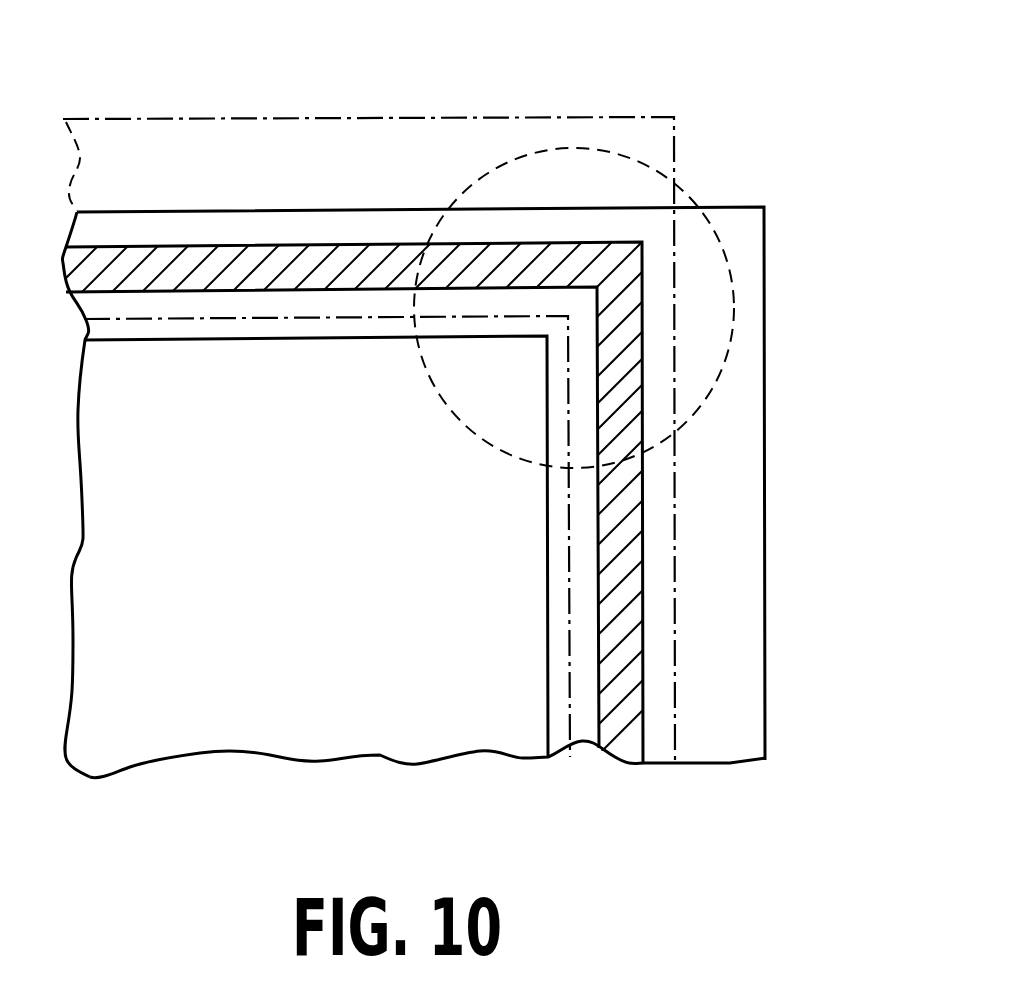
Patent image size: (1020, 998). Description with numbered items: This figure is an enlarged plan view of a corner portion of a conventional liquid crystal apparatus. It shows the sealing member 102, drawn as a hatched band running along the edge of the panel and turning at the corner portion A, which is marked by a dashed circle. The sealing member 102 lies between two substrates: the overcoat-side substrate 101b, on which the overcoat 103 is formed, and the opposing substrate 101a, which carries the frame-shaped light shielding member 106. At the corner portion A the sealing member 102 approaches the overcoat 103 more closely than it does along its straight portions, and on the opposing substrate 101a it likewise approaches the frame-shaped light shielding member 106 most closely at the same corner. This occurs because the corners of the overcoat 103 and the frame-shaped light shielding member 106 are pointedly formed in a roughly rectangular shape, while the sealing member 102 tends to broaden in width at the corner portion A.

The substrate 101a is at (366, 116).
The overcoat-side substrate 101b is at (764, 458).
The sealing member 102 is at (171, 254).
The overcoat 103 is at (333, 568).
The frame-shaped light shielding member 106 is at (568, 641).
The corner portion A is at (556, 148).